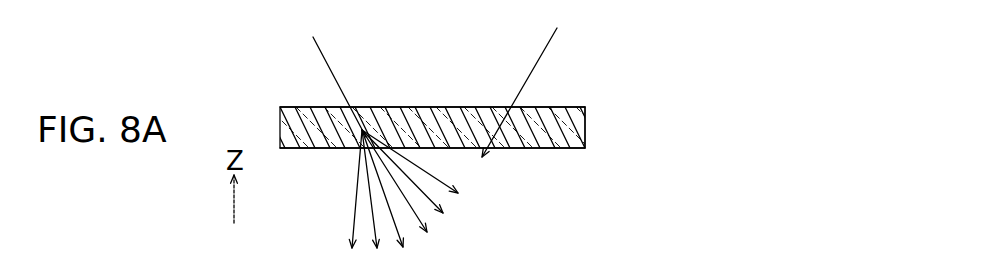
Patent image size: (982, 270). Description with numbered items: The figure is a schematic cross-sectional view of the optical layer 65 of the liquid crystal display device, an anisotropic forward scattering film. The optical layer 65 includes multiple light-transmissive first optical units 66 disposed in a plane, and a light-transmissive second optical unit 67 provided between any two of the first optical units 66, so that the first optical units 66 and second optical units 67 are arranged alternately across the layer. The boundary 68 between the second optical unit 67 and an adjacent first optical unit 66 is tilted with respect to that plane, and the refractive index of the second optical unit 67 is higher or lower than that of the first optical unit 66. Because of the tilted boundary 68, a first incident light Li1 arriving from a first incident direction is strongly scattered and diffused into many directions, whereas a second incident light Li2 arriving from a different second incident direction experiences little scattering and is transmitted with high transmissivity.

The optical layer 65 is at (593, 88).
The first optical units 66 is at (538, 148).
The second optical unit 67 is at (560, 148).
The boundary 68 is at (535, 108).
The first incident light Li1 is at (323, 65).
The second incident light Li2 is at (533, 63).